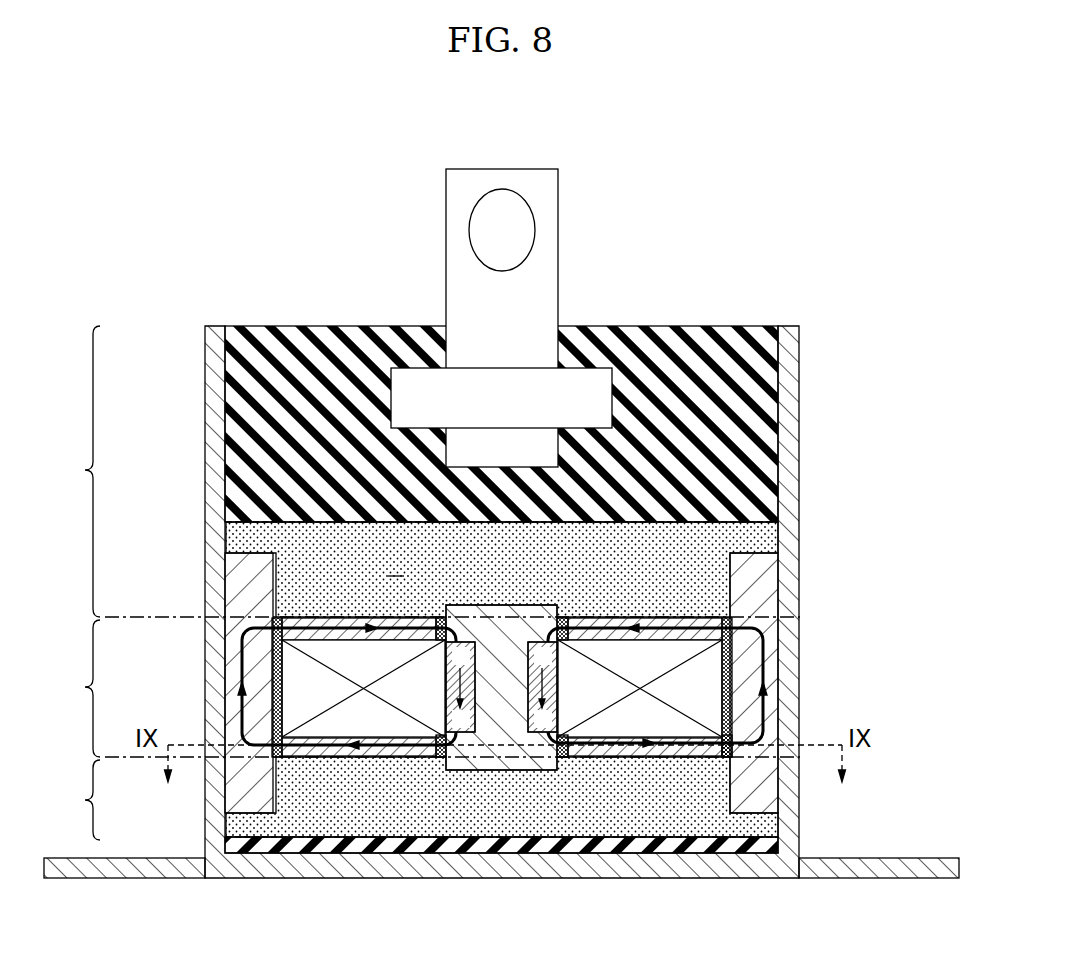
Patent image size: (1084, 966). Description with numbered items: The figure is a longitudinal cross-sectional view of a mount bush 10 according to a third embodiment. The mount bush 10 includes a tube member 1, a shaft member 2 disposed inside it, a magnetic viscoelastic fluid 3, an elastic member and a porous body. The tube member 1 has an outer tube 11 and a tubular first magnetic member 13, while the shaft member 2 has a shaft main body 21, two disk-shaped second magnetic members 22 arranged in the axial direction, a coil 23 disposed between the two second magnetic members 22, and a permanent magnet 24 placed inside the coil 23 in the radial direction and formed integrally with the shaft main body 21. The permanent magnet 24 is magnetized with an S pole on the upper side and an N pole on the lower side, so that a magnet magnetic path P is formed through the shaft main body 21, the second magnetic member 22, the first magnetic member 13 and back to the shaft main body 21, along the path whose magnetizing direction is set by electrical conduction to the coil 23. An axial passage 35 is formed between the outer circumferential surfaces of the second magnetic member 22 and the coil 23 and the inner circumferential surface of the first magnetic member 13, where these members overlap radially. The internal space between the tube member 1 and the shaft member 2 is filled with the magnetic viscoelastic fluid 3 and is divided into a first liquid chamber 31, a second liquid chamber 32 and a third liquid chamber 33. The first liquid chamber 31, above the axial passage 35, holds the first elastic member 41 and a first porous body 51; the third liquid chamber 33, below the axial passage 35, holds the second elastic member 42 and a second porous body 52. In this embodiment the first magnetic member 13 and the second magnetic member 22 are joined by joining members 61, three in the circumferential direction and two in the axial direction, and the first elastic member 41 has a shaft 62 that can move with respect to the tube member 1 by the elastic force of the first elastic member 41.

The tube member 1 is at (206, 318).
The shaft member 2 is at (511, 778).
The magnetic viscoelastic fluid 3 is at (668, 560).
The mount bush 10 is at (751, 197).
The outer tube 11 is at (881, 858).
The first magnetic member 13 is at (768, 580).
The shaft main body 21 is at (520, 724).
The second magnetic member 22 is at (320, 746).
The coil 23 is at (388, 737).
The permanent magnet 24 is at (486, 725).
The first liquid chamber 31 is at (78, 487).
The second liquid chamber 32 is at (78, 705).
The third liquid chamber 33 is at (78, 815).
The axial passage 35 is at (735, 650).
The first elastic member 41 is at (752, 326).
The second elastic member 42 is at (737, 848).
The first porous body 51 is at (655, 520).
The second porous body 52 is at (650, 840).
The joining member 61 is at (745, 757).
The shaft 62 is at (436, 158).
The magnet magnetic path P is at (760, 672).